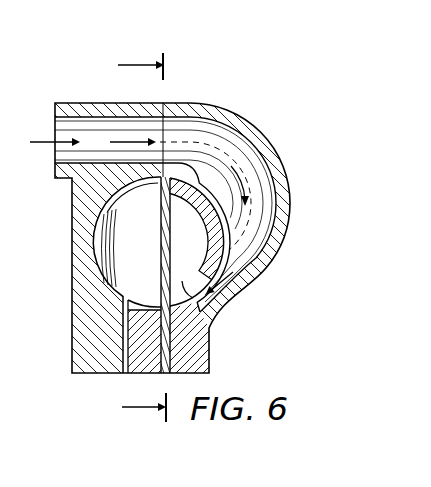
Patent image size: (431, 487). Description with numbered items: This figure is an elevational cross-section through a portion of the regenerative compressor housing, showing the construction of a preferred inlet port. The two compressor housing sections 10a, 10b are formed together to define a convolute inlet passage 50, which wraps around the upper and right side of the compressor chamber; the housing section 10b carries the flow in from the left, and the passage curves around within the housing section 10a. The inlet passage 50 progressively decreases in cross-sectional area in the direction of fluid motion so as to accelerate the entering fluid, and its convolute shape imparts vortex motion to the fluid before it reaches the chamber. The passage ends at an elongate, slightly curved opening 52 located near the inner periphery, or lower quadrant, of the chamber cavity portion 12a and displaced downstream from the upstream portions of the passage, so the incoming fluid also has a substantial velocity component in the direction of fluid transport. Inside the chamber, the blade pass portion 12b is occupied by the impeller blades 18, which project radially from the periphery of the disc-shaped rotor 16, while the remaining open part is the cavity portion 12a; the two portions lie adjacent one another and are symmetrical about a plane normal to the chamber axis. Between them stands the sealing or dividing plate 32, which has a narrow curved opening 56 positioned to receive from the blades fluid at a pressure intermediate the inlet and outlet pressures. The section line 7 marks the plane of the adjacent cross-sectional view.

The section line 7- 7 is at (142, 238).
The compressor housing section 10a is at (202, 352).
The compressor housing section 10b is at (88, 333).
The cavity portion 12a is at (212, 247).
The blade pass portion 12b is at (100, 214).
The rotor 16 is at (147, 366).
The impeller blades 18 is at (167, 229).
The sealing plate 32 is at (144, 281).
The inlet passage 50 is at (221, 134).
The opening 52 is at (190, 277).
The curved opening 56 is at (164, 177).